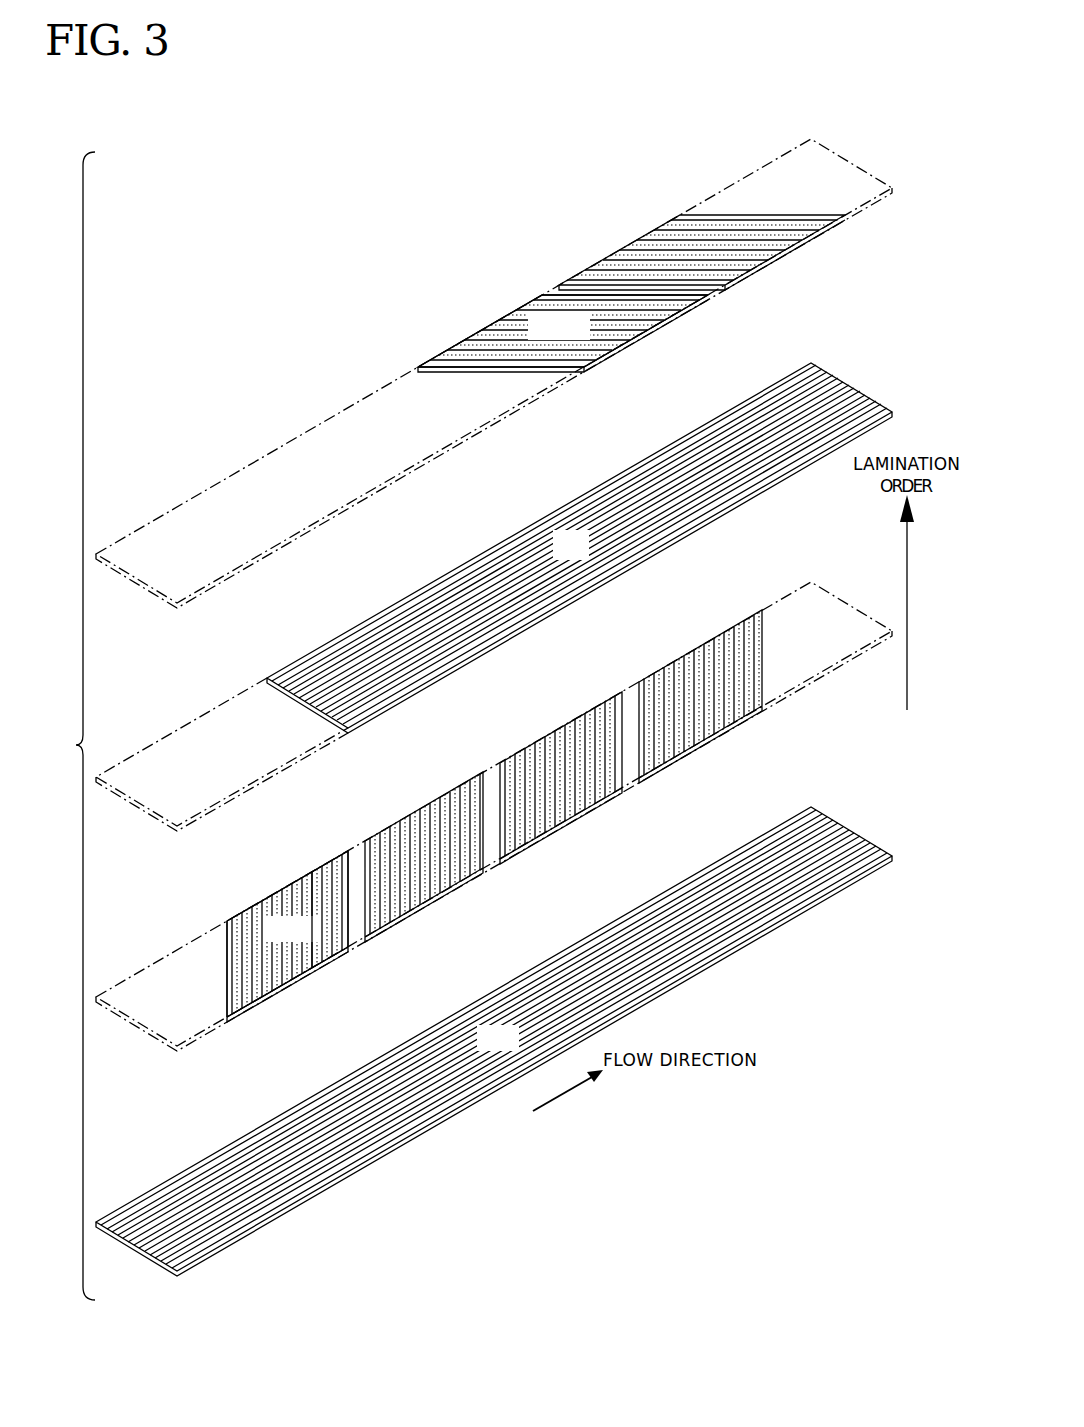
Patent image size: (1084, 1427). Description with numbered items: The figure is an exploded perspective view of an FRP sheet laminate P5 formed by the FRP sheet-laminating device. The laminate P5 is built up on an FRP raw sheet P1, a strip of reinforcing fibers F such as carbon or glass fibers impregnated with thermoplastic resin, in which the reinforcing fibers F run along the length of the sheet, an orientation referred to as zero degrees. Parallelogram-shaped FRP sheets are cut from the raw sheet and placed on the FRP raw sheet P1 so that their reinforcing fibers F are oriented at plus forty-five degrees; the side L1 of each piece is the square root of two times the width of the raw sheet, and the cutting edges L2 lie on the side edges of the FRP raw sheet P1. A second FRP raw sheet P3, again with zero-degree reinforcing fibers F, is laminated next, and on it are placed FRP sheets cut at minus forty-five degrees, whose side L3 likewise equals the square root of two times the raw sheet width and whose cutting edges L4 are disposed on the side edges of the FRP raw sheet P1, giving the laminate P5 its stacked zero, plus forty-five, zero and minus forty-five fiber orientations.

The FRP raw sheet P1 is at (827, 826).
The FRP raw sheet P3 is at (815, 367).
The FRP sheet laminate P5 is at (68, 726).
The side L1 is at (225, 945).
The cutting edge L2 is at (313, 870).
The side L3 is at (577, 293).
The cutting edge L4 is at (525, 298).
The reinforcing fiber F is at (672, 288).